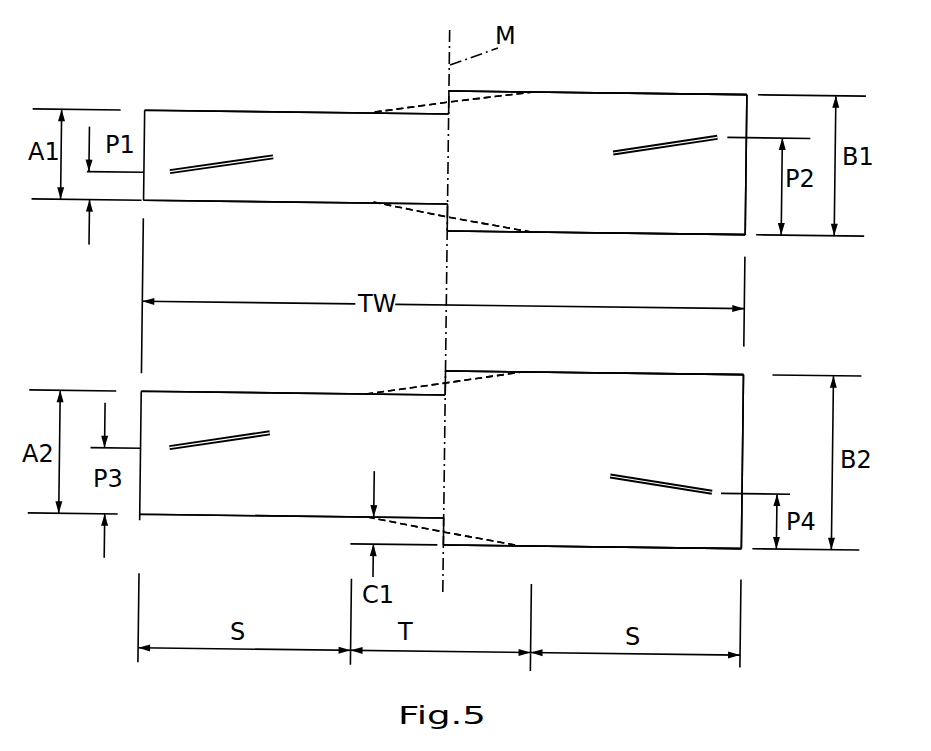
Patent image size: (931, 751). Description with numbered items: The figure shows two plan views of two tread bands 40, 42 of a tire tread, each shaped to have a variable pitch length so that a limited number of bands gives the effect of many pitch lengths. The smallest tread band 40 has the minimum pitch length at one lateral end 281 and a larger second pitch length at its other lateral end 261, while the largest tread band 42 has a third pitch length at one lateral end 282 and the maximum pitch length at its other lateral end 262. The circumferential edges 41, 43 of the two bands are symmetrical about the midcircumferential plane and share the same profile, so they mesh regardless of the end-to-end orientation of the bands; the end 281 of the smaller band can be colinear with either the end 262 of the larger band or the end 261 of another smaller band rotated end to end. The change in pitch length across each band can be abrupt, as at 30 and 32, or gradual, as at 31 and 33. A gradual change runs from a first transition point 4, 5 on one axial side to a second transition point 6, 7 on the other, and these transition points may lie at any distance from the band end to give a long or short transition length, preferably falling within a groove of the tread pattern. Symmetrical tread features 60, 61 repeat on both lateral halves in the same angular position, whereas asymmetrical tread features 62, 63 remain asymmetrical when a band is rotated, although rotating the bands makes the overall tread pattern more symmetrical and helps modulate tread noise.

The lateral end 281 is at (143, 120).
The lateral end 282 is at (142, 425).
The smallest tread band 40 is at (694, 108).
The largest tread band 42 is at (701, 396).
The lateral end 261 is at (748, 100).
The lateral end 262 is at (747, 394).
The first transition point 4 is at (356, 113).
The first transition point 5 is at (356, 394).
The second transition point 6 is at (528, 91).
The second transition point 7 is at (538, 373).
The abrupt change 30 is at (446, 99).
The gradual change 31 is at (397, 110).
The abrupt change 32 is at (443, 388).
The gradual change 33 is at (475, 379).
The circumferential edge 41 is at (606, 90).
The circumferential edge 43 is at (617, 373).
The symmetrical tread feature 60 is at (229, 156).
The symmetrical tread feature 61 is at (661, 138).
The asymmetrical tread feature 62 is at (216, 452).
The asymmetrical tread feature 63 is at (649, 490).